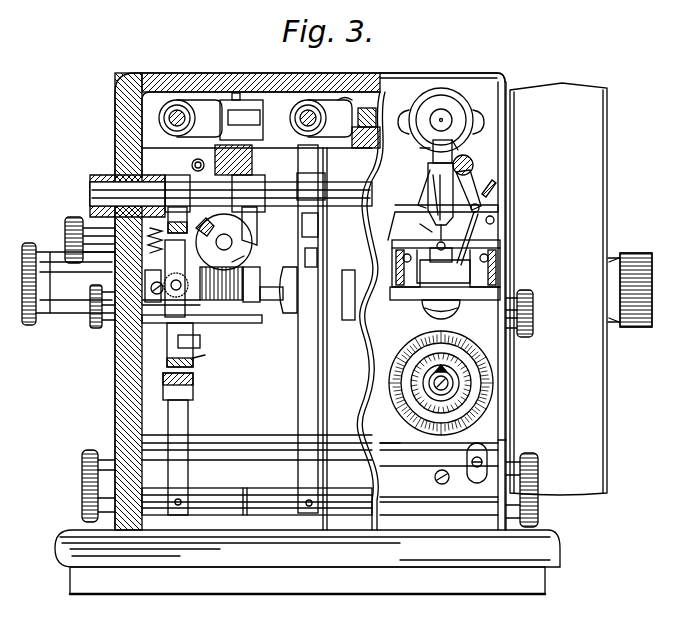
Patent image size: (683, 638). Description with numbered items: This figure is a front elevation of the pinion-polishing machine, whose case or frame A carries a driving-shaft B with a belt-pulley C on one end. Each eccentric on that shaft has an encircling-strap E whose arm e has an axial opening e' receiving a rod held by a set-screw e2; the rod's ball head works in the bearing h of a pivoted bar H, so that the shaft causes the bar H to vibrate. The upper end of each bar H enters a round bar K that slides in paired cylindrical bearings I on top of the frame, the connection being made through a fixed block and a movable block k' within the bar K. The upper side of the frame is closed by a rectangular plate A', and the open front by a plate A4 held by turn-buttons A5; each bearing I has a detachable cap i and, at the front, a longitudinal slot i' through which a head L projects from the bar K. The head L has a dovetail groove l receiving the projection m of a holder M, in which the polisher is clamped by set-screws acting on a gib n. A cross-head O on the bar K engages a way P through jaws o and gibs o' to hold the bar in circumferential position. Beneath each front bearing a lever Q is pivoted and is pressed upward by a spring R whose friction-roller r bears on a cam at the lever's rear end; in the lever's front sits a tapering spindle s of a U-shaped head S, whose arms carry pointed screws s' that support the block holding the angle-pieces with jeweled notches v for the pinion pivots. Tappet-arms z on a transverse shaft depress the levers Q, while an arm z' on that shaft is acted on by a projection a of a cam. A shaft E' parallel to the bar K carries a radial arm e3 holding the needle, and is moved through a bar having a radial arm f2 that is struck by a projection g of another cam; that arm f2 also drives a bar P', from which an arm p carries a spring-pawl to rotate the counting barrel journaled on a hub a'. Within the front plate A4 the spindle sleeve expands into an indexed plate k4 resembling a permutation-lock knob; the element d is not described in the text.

The case or frame A is at (296, 301).
The rectangular plate A' is at (429, 68).
The front plate A4 is at (388, 431).
The turn-buttons A5 is at (498, 453).
The driving-shaft B is at (224, 242).
The belt-pulley C is at (581, 289).
The encircling-strap E is at (345, 259).
The shaft E' is at (210, 160).
The bars H is at (193, 386).
The cylindrical bearings I is at (414, 148).
The round bar K is at (242, 118).
The head L is at (433, 160).
The holder M is at (428, 200).
The cross-head O is at (264, 118).
The way P is at (300, 124).
The bar P' is at (212, 303).
The bar or lever Q is at (452, 305).
The spring R is at (298, 374).
The U-shaped head S is at (444, 252).
The projection a is at (205, 226).
The hub a' is at (238, 260).
The knob shaft d is at (68, 284).
The arm e is at (154, 286).
The axial opening e' is at (485, 235).
The set-screw e2 is at (490, 205).
The radial arm e3 is at (474, 191).
The radial arm f2 is at (158, 240).
The projection g is at (176, 262).
The bearing h is at (293, 313).
The detachable cap i is at (441, 120).
The longitudinal slot i' is at (467, 149).
The movable block k' is at (441, 377).
The indexed plate k4 is at (479, 443).
The longitudinal groove l is at (420, 195).
The projection m is at (426, 232).
The gib n is at (467, 238).
The jaws o is at (292, 99).
The gibs o' is at (367, 117).
The arm p is at (167, 343).
The friction-roller r is at (317, 252).
The spindle s is at (419, 285).
The screw s' is at (515, 294).
The jeweled notch v is at (442, 243).
The tappet-arms z is at (231, 196).
The arm z' is at (254, 226).